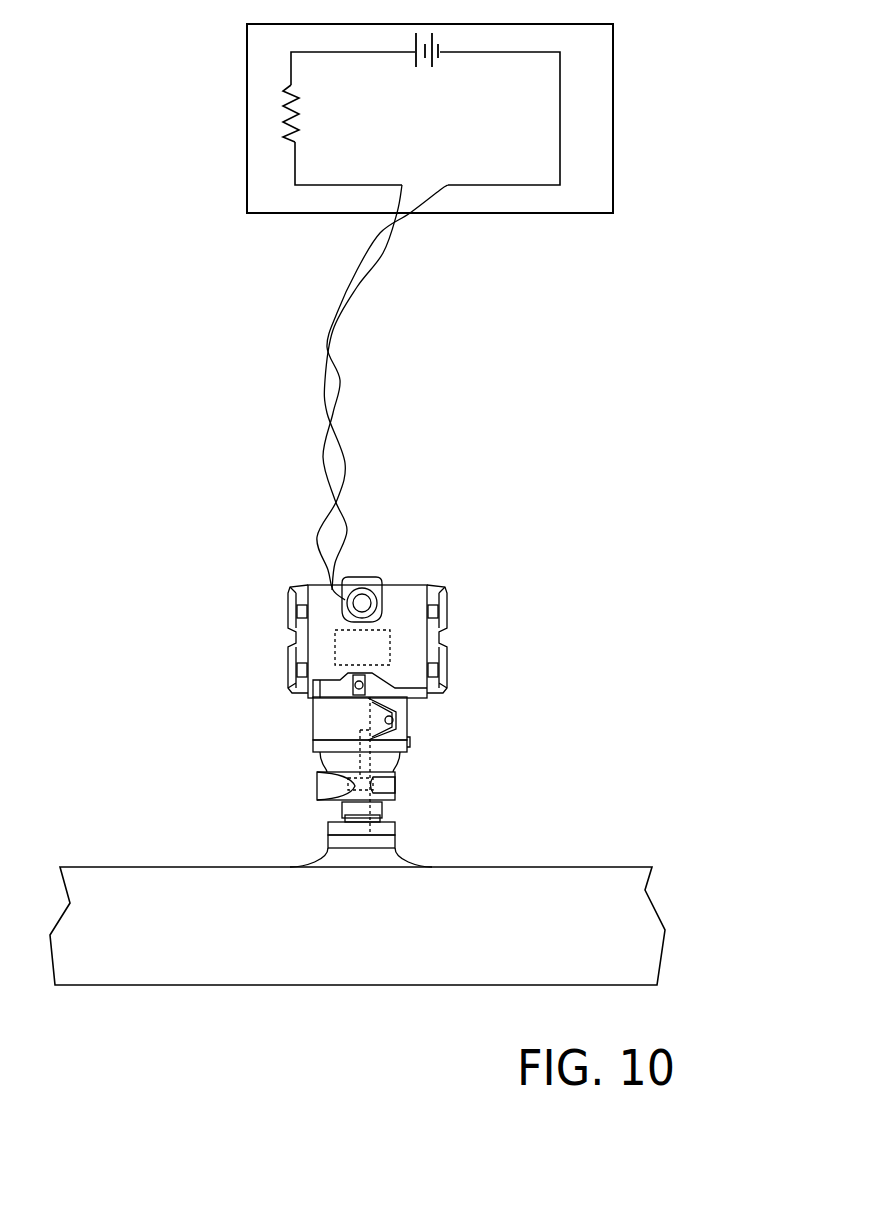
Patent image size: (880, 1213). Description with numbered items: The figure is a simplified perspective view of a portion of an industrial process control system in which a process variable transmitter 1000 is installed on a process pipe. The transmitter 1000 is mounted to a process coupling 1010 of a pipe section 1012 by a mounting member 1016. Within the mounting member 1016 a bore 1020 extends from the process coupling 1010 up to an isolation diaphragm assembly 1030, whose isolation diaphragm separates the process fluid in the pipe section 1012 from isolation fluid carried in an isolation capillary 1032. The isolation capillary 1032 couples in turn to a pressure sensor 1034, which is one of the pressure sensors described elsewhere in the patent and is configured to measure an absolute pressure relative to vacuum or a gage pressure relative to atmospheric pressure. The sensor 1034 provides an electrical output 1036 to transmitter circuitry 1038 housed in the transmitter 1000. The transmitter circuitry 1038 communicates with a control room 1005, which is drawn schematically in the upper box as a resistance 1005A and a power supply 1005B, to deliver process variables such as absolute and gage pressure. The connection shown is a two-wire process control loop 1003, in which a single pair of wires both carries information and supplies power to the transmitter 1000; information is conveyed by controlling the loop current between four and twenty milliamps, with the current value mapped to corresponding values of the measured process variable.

The control room 1005 is at (613, 155).
The resistance 1005A is at (283, 115).
The power supply 1005B is at (415, 72).
The two-wire process control loop 1003 is at (373, 272).
The process variable transmitter 1000 is at (453, 570).
The transmitter circuitry 1038 is at (385, 637).
The electrical output 1036 is at (370, 688).
The isolation capillary 1032 is at (395, 797).
The pressure sensor 1034 is at (347, 780).
The isolation diaphragm assembly 1030 is at (383, 815).
The bore 1020 is at (352, 827).
The process coupling 1010 is at (333, 843).
The mounting member 1016 is at (397, 828).
The pipe section 1012 is at (128, 882).